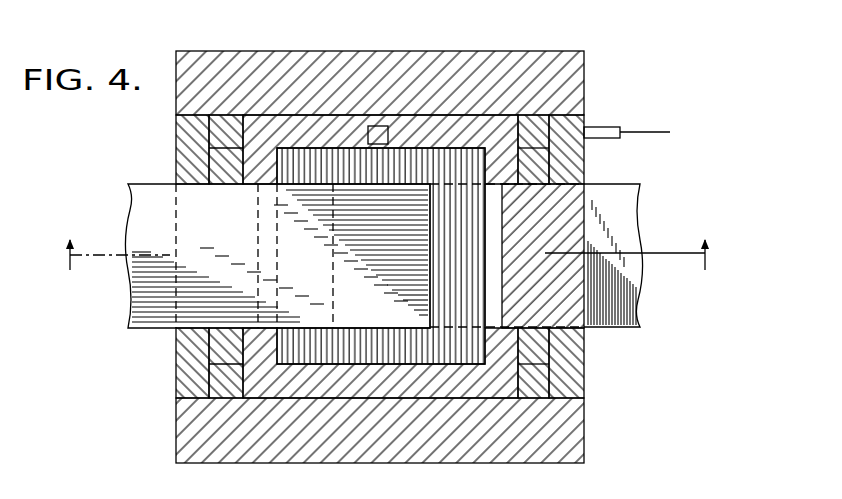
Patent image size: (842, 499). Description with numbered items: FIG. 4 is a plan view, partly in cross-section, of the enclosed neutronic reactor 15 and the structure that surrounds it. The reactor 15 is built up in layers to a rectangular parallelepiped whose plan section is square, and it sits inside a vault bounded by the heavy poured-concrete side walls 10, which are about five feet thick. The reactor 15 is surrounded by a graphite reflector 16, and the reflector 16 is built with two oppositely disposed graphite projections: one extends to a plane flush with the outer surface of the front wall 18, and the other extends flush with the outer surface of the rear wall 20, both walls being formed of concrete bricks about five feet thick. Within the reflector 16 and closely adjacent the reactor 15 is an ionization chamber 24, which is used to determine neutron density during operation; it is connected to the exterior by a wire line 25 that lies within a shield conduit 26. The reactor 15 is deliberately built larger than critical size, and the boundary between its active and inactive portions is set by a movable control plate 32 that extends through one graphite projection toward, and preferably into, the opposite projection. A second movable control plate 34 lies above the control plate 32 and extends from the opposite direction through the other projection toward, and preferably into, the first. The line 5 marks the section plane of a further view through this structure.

The section line 5- 5 is at (386, 255).
The side walls 10 is at (325, 115).
The neutronic reactor 15 is at (382, 352).
The graphite reflector 16 is at (360, 147).
The front wall 18 is at (586, 120).
The rear wall 20 is at (176, 148).
The ionization chamber 24 is at (437, 62).
The wire line 25 is at (657, 131).
The shield conduit 26 is at (610, 138).
The movable control plate 32 is at (620, 283).
The second movable control plate 34 is at (150, 300).